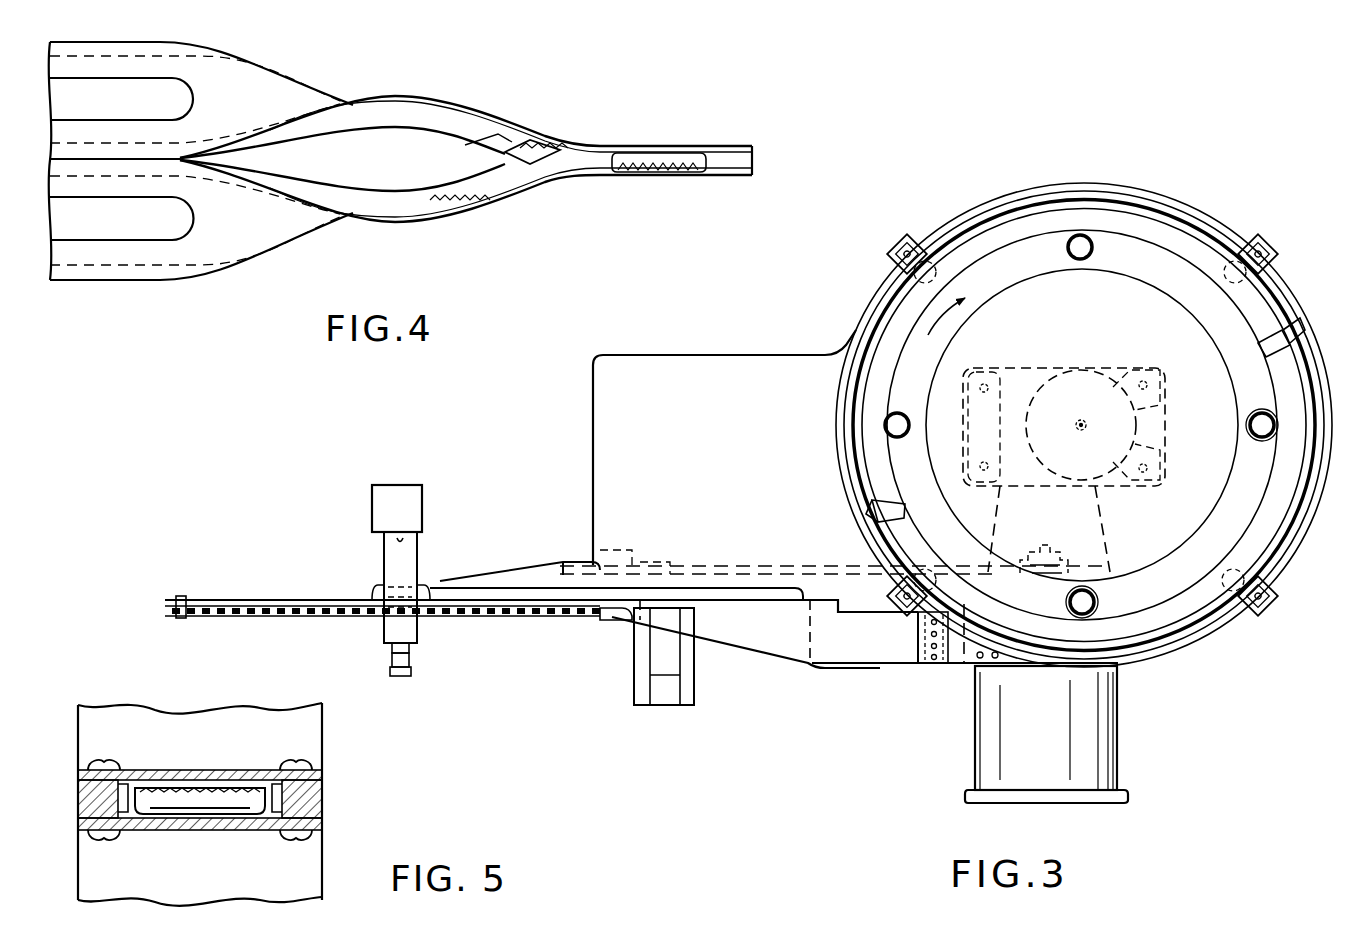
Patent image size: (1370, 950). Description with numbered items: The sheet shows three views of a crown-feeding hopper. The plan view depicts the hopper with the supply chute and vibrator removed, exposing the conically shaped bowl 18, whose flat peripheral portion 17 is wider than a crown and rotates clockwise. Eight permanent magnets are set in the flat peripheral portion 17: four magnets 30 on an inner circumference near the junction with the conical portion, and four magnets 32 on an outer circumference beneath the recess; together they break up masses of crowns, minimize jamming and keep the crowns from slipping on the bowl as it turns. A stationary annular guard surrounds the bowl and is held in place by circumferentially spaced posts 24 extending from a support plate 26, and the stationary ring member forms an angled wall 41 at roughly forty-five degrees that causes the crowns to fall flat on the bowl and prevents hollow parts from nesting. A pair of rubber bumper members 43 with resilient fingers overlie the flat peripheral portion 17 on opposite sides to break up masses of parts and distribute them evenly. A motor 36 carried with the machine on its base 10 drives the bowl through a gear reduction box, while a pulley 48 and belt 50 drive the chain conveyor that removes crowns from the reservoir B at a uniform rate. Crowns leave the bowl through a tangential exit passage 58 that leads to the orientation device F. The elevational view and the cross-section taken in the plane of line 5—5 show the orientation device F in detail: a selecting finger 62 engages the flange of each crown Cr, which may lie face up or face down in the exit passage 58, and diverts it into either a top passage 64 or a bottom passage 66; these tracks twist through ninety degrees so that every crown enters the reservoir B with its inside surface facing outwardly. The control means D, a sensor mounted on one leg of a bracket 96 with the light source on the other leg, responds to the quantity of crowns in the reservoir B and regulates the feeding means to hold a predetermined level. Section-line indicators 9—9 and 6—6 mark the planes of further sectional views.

In FIG. 3, the section line 9- 9 is at (1318, 350).
In FIG. 3, the base 10 is at (1183, 590).
In FIG. 3, the flat peripheral portion 17 is at (1194, 300).
In FIG. 3, the conically shaped bowl 18 is at (1028, 338).
In FIG. 3, the posts 24 is at (905, 238).
In FIG. 3, the support plate 26 is at (814, 353).
In FIG. 3, the magnets 30 is at (1070, 259).
In FIG. 3, the magnets 32 is at (938, 268).
In FIG. 3, the motor 36 is at (1120, 732).
In FIG. 3, the wall 41 is at (1172, 231).
In FIG. 3, the bumper member 43 is at (1265, 340).
In FIG. 3, the pulley 48 is at (565, 562).
In FIG. 3, the belt 50 is at (745, 566).
In FIG. 4, the passage 58 is at (727, 151).
In FIG. 3, the passage 58 is at (956, 668).
In FIG. 4, the selecting finger 62 is at (500, 140).
In FIG. 5, the selecting finger 62 is at (298, 795).
In FIG. 4, the top passage 64 is at (438, 112).
In FIG. 5, the top passage 64 is at (298, 735).
In FIG. 4, the bottom passage 66 is at (416, 205).
In FIG. 5, the bottom passage 66 is at (298, 857).
In FIG. 3, the bracket 96 is at (406, 556).
In FIG. 4, the line 5— 5 is at (610, 118).
In FIG. 3, the section line 6- 6 is at (935, 672).
In FIG. 4, the crown CR is at (668, 150).
In FIG. 5, the crown CR is at (205, 802).
In FIG. 4, the orientation device F is at (393, 90).
In FIG. 3, the orientation device F is at (786, 668).
In FIG. 3, the control means D is at (428, 500).
In FIG. 3, the reservoir B is at (324, 618).